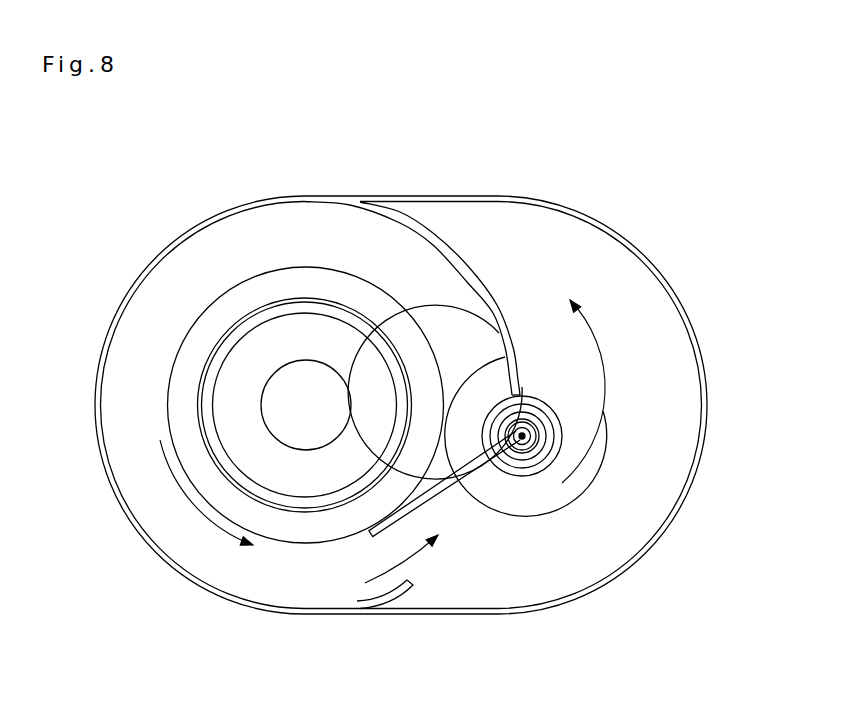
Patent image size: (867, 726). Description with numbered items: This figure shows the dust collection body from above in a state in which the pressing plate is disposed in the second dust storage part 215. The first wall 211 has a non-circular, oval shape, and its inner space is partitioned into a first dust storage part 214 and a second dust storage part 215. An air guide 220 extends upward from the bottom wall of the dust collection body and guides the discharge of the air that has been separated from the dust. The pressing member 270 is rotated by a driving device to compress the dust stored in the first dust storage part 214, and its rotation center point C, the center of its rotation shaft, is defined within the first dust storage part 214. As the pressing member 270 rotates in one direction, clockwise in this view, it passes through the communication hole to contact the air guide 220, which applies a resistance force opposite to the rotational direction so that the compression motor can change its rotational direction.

The first wall 211 is at (437, 190).
The first dust storage part 214 is at (667, 410).
The second dust storage part 215 is at (328, 236).
The air guide 220 is at (220, 320).
The pressing member 270 is at (447, 487).
The rotation center point C is at (525, 440).